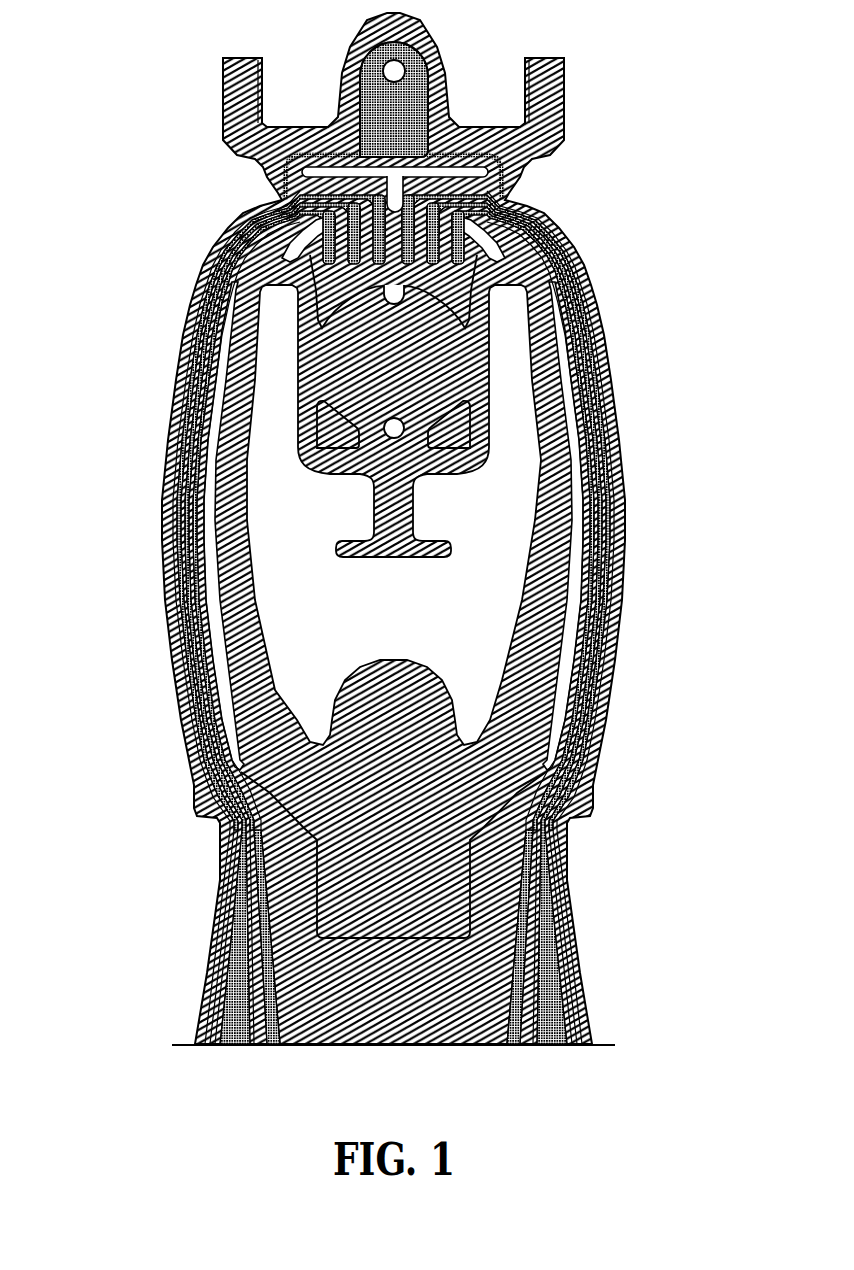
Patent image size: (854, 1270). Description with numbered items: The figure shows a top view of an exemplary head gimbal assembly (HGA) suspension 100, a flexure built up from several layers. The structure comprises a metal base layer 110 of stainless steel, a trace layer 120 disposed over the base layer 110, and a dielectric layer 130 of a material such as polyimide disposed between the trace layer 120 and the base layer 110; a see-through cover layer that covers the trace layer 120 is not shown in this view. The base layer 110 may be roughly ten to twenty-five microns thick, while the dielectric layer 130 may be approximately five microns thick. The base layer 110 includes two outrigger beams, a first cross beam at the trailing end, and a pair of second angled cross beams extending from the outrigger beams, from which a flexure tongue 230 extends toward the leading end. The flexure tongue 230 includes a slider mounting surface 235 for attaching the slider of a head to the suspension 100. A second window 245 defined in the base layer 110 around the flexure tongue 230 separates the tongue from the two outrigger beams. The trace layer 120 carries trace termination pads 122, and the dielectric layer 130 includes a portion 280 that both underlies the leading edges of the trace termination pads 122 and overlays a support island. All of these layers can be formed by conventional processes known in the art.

The head gimbal assembly (HGA) suspension 100 is at (143, 128).
The metal base layer 110 is at (232, 443).
The trace layer 120 is at (178, 365).
The trace termination pads 122 is at (313, 257).
The dielectric layer 130 is at (177, 310).
The flexure tongue 230 is at (482, 460).
The slider mounting surface 235 is at (313, 345).
The second window 245 is at (502, 532).
The portion of the dielectric layer 280 is at (458, 286).